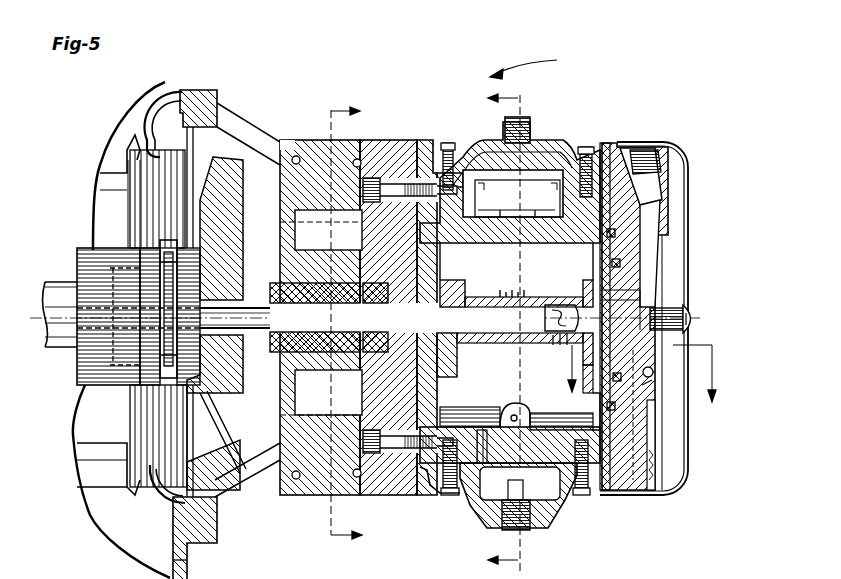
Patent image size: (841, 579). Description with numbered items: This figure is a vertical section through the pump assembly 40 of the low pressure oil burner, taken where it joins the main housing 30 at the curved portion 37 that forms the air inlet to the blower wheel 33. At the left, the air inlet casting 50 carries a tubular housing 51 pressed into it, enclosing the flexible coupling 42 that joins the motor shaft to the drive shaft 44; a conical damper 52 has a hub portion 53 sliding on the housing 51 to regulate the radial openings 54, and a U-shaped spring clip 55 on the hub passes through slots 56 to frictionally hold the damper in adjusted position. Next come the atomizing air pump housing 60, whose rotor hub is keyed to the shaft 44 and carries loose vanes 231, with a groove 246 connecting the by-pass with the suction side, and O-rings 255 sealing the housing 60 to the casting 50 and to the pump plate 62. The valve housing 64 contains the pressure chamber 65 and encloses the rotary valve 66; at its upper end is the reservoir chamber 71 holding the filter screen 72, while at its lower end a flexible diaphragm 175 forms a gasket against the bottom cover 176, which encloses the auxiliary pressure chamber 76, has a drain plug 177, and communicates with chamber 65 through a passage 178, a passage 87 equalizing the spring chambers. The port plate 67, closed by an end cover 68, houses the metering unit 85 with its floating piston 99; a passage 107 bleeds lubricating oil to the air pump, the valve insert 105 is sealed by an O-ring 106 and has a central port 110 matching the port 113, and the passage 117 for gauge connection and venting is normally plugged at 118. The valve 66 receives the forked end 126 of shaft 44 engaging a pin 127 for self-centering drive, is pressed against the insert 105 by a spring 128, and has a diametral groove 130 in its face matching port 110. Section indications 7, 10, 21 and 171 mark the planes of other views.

The section line 7 is at (642, 373).
The section line 10 is at (512, 326).
The section line 21 is at (334, 324).
The main housing 30 is at (199, 569).
The blower wheel 33 is at (123, 160).
The curved portion 37 is at (135, 137).
The pump assembly 40 is at (537, 63).
The flexible coupling 42 is at (52, 350).
The drive shaft 44 is at (470, 308).
The air inlet casting 50 is at (207, 98).
The tubular housing 51 is at (70, 372).
The conical damper 52 is at (239, 168).
The hub portion 53 is at (143, 393).
The radial openings 54 is at (160, 147).
The U-shaped spring clip 55 is at (170, 240).
The slots 56 is at (160, 267).
The atomizing air pump housing 60 is at (315, 148).
The pump plate 62 is at (393, 152).
The valve housing 64 is at (425, 142).
The pressure chamber 65 is at (500, 247).
The rotary valve 66 is at (553, 298).
The port plate 67 is at (625, 425).
The end cover 68 is at (683, 470).
The reservoir chamber 71 is at (533, 168).
The filter screen 72 is at (535, 190).
The auxiliary pressure chamber 76 is at (548, 508).
The metering unit 85 is at (650, 377).
The passage 87 is at (513, 413).
The floating piston 99 is at (692, 322).
The valve insert 105 is at (640, 292).
The O-ring 106 is at (593, 372).
The passage 107 is at (655, 412).
The central port 110 is at (640, 300).
The port 113 is at (640, 305).
The passage 117 is at (645, 192).
The plug 118 is at (648, 148).
The forked end 126 is at (560, 302).
The pin 127 is at (553, 337).
The spring 128 is at (516, 296).
The diametral groove 130 is at (665, 245).
The passage 171 is at (700, 569).
The flexible diaphragm 175 is at (577, 518).
The bottom cover 176 is at (572, 530).
The drain plug 177 is at (503, 527).
The passage 178 is at (458, 507).
The vanes 231 is at (352, 492).
The groove 246 is at (237, 432).
The O-rings 255 is at (357, 150).